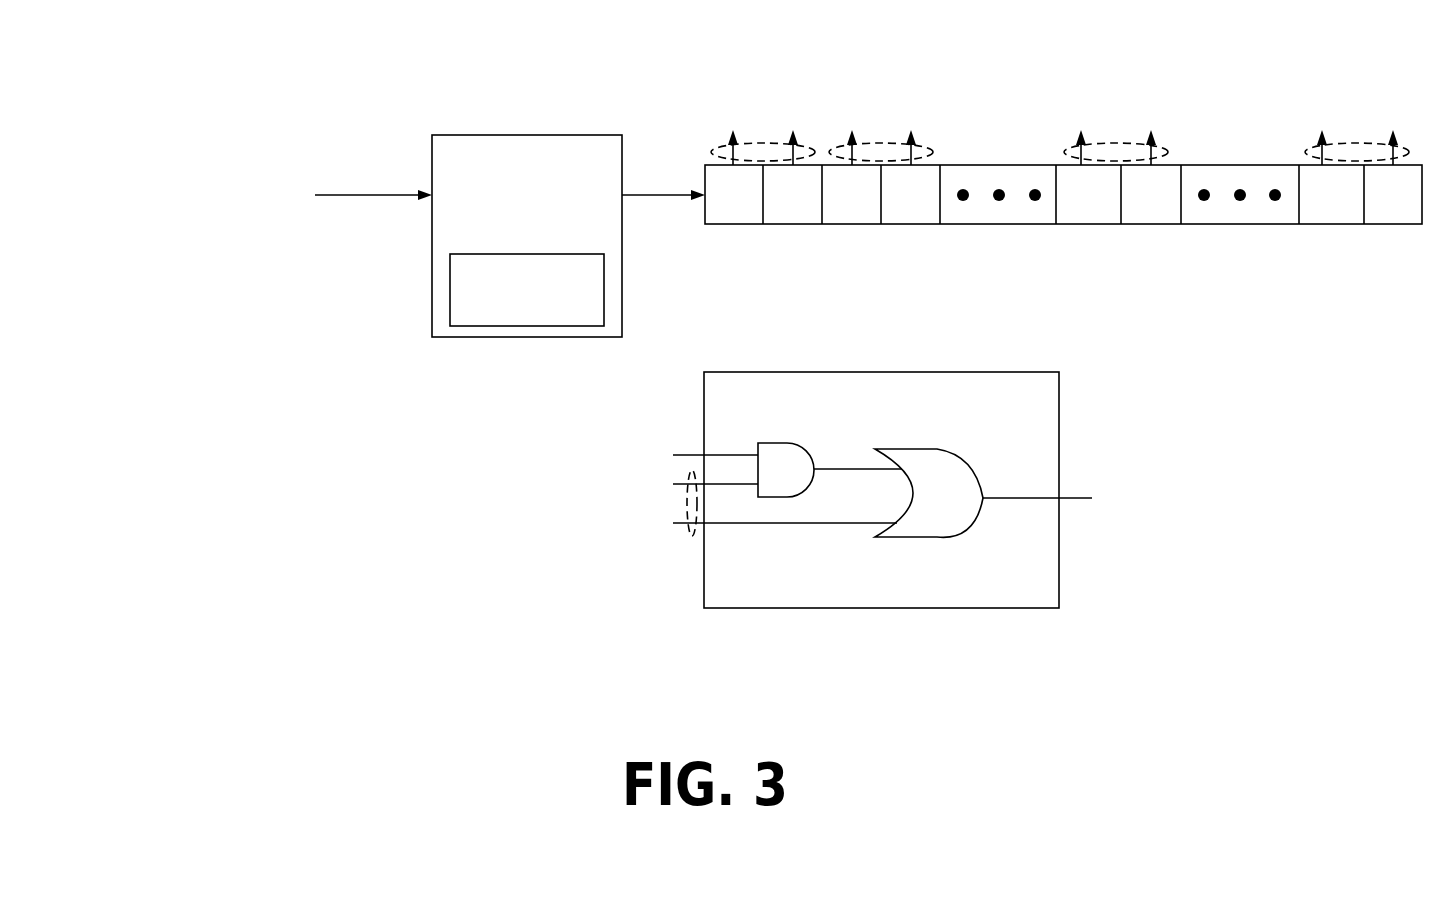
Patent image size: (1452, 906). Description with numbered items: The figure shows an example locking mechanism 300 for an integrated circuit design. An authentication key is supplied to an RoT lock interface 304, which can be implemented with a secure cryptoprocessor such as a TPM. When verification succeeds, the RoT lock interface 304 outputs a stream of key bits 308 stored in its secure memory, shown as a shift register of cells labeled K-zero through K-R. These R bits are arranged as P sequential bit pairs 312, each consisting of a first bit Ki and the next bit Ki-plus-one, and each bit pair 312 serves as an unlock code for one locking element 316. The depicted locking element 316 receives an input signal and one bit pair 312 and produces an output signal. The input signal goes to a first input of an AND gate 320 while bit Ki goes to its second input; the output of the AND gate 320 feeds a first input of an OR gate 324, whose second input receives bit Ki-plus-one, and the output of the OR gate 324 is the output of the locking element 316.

The locking mechanism 300 is at (677, 45).
The RoT lock interface 304 is at (482, 231).
The key bits 308 is at (507, 316).
The bit pair 312 is at (1019, 334).
The locking element 316 is at (998, 597).
The AND gate 320 is at (782, 443).
The OR gate 324 is at (910, 450).